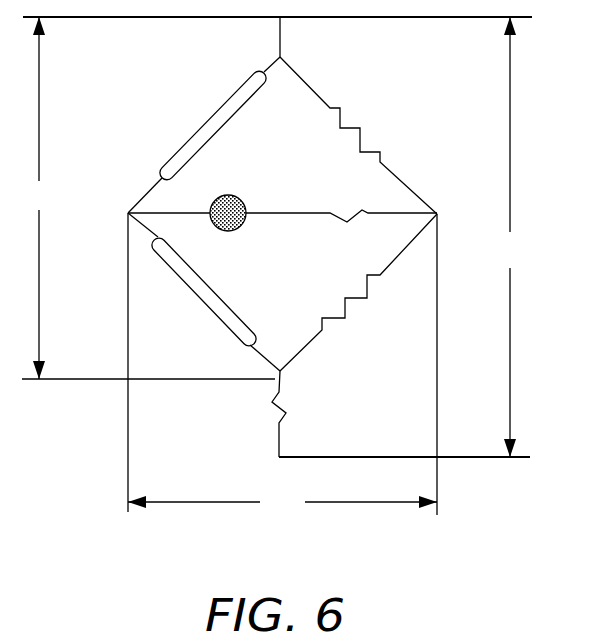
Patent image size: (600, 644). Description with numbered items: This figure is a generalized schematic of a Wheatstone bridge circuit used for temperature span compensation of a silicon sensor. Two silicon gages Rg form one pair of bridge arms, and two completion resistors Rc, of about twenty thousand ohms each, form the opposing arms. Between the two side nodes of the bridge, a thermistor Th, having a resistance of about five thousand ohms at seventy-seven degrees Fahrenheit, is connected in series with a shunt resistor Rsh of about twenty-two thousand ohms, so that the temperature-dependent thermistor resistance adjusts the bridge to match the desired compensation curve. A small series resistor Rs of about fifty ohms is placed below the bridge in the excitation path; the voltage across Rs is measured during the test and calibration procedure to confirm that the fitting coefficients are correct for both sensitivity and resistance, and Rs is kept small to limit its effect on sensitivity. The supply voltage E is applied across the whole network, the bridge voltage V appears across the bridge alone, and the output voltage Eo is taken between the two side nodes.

The silicon gage Rg is at (204, 214).
The completion resistance Rc is at (358, 214).
The thermistor Th is at (188, 199).
The shunt resistor Rsh is at (341, 204).
The series resistor Rs is at (260, 414).
The bridge voltage V is at (38, 198).
The supply voltage E is at (510, 237).
The output voltage Eo is at (282, 503).